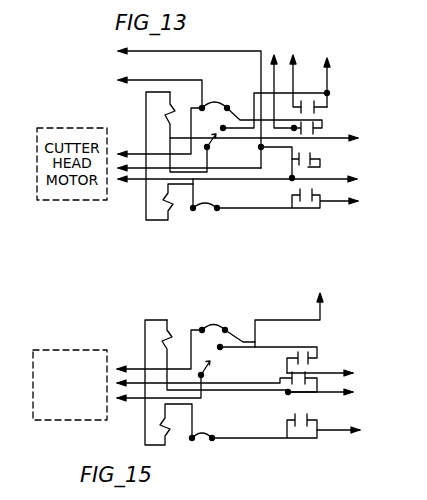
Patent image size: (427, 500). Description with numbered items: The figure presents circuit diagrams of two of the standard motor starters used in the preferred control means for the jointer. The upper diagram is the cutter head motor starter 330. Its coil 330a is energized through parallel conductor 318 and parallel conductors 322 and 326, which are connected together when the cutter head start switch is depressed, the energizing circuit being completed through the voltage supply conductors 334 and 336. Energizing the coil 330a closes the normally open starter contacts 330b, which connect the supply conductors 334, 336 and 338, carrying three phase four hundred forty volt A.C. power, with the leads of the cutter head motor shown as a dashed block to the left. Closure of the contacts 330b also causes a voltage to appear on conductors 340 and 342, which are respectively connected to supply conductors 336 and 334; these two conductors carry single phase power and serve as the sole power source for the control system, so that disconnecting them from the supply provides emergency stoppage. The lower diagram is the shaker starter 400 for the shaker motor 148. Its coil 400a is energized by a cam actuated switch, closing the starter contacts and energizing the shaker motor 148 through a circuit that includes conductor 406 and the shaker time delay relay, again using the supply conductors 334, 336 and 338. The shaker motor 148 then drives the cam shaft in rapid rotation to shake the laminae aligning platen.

In FIG. 13, the conductor 340 is at (139, 50).
In FIG. 13, the conductor 342 is at (124, 82).
In FIG. 13, the parallel conductor 326 is at (270, 62).
In FIG. 13, the parallel conductor 322 is at (291, 62).
In FIG. 13, the parallel conductor 318 is at (331, 70).
In FIG. 13, the cutter head motor starter 330 is at (248, 179).
In FIG. 13, the coil 330a is at (214, 141).
In FIG. 13, the starter contact 330b is at (318, 166).
In FIG. 13, the supply conductor 334 is at (333, 138).
In FIG. 15, the supply conductor 334 is at (335, 373).
In FIG. 13, the supply conductor 336 is at (334, 180).
In FIG. 15, the supply conductor 336 is at (341, 392).
In FIG. 13, the supply conductor 338 is at (338, 210).
In FIG. 15, the supply conductor 338 is at (335, 430).
In FIG. 15, the shaker motor 148 is at (63, 352).
In FIG. 15, the conductor 406 is at (322, 310).
In FIG. 15, the shaker starter 400 is at (249, 405).
In FIG. 15, the coil 400a is at (211, 360).